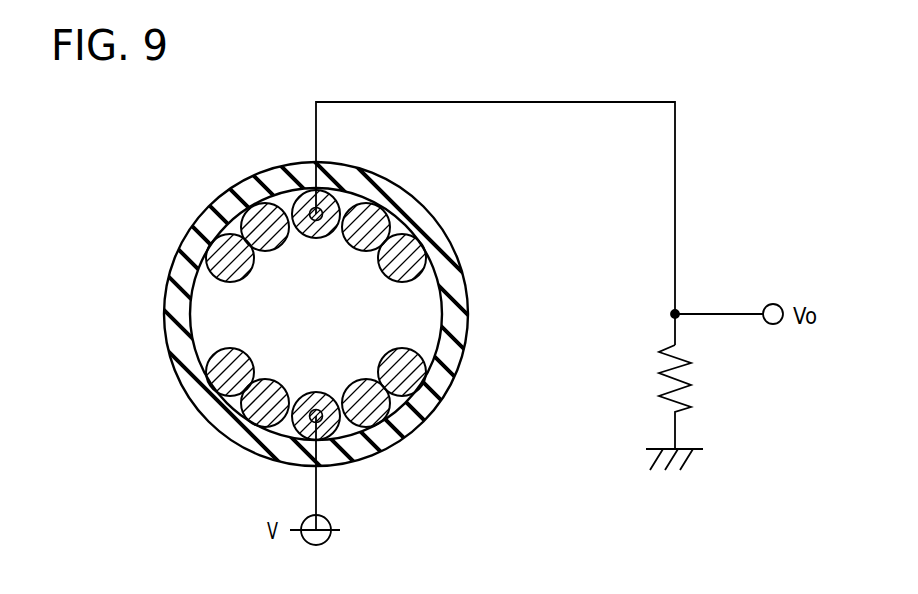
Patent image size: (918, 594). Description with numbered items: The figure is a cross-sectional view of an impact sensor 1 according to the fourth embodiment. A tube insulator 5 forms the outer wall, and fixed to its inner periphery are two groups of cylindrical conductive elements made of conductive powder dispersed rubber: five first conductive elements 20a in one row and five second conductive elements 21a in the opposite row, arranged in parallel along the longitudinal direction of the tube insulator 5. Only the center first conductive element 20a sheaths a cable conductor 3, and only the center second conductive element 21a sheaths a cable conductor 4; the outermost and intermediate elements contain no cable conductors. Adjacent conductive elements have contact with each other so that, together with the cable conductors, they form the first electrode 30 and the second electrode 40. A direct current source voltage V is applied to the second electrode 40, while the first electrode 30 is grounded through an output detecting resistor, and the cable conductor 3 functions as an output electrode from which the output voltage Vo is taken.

The impact sensor 1 is at (185, 430).
The first cable conductor 3 is at (310, 211).
The second cable conductor 4 is at (309, 427).
The tube insulator 5 is at (452, 351).
The first conductive element 20a is at (213, 265).
The second conductive element 21a is at (213, 366).
The first electrode 30 is at (320, 246).
The second electrode 40 is at (285, 377).